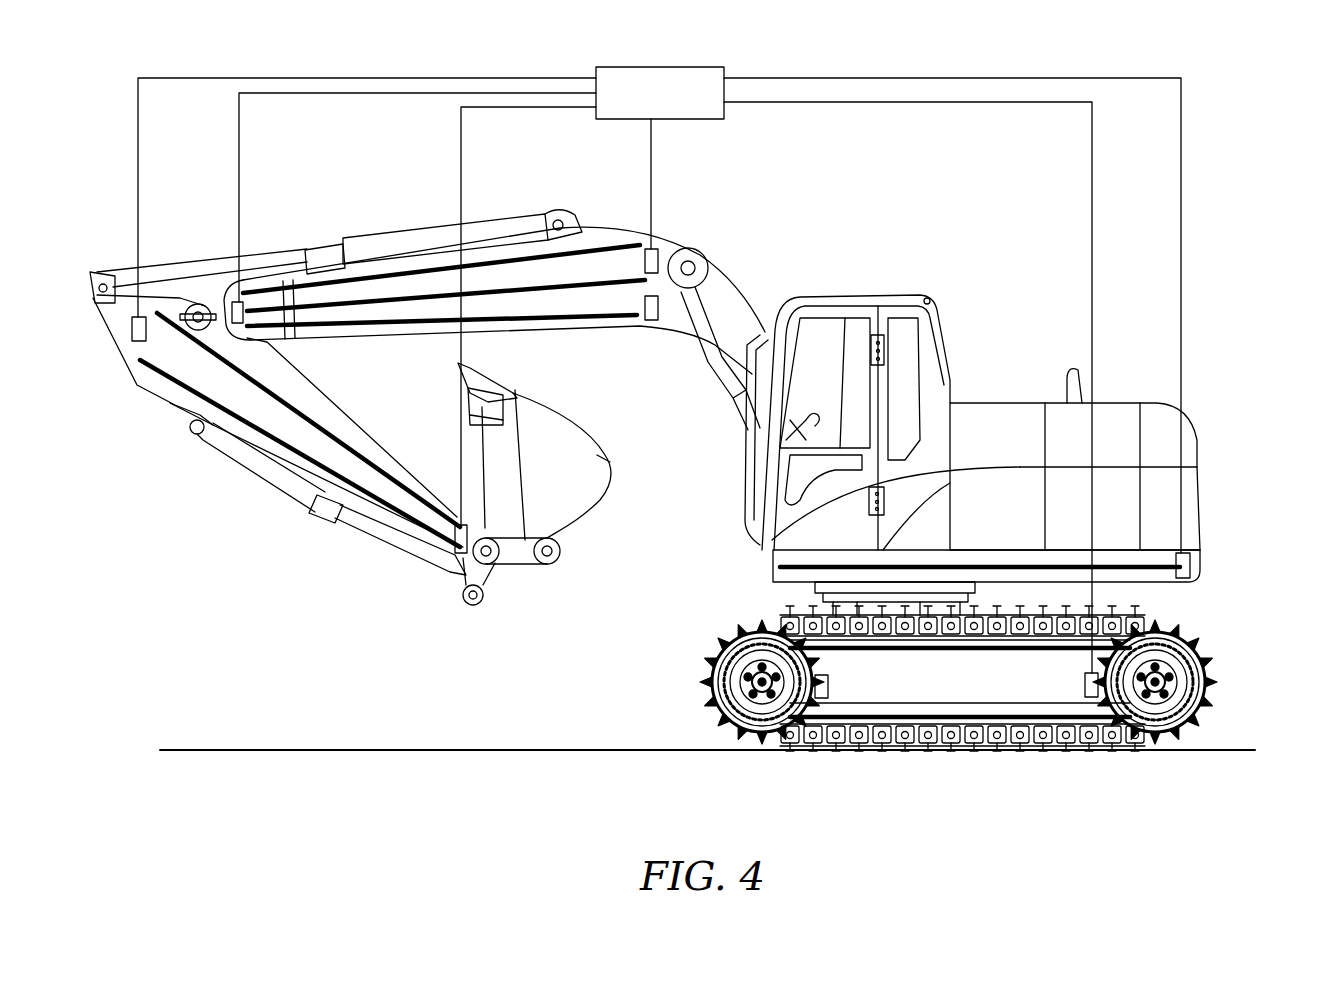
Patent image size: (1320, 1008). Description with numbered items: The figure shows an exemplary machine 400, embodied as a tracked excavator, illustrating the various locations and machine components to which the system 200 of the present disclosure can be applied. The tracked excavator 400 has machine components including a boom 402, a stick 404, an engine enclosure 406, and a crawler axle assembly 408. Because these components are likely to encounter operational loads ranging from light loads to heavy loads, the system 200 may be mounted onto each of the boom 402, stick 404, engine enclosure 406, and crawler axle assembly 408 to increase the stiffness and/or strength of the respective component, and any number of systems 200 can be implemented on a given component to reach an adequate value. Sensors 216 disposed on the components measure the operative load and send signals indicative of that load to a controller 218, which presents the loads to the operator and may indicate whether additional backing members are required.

The system 200 is at (563, 286).
The sensors 216 is at (140, 316).
The controller 218 is at (659, 370).
The machine 400 is at (685, 433).
The boom 402 is at (390, 290).
The stick 404 is at (360, 445).
The engine enclosure 406 is at (1105, 495).
The crawler axle assembly 408 is at (1185, 633).